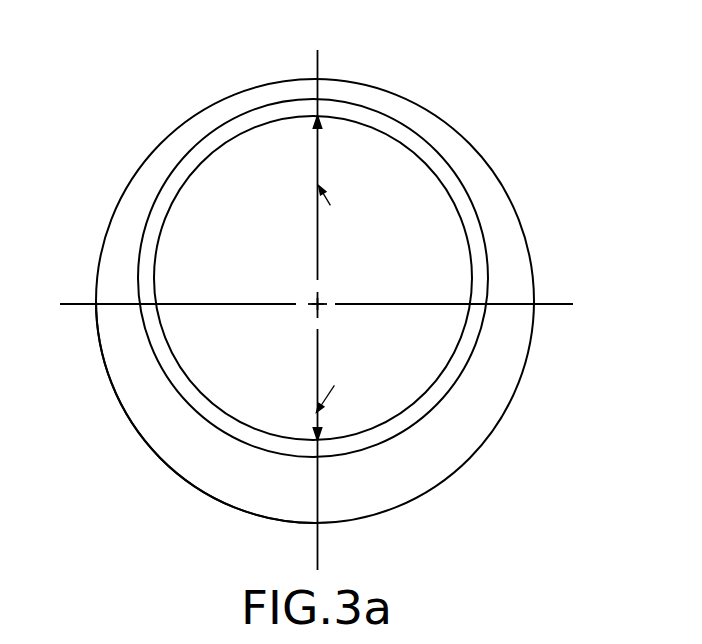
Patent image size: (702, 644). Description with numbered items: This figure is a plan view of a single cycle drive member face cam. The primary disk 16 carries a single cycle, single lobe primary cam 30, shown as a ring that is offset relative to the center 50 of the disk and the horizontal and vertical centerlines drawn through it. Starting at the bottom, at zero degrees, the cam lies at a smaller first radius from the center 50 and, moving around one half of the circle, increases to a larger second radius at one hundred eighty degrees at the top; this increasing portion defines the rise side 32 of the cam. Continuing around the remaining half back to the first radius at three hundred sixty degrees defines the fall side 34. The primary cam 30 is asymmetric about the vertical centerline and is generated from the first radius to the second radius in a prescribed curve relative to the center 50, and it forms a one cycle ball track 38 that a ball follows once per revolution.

The primary disk 16 is at (460, 56).
The primary cam 30 is at (197, 461).
The rise side 32 is at (143, 403).
The fall side 34 is at (450, 439).
The one cycle ball track 38 is at (459, 145).
The center 50 is at (299, 285).